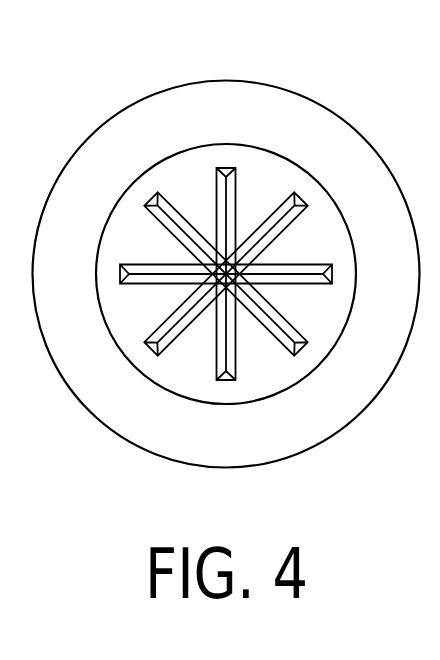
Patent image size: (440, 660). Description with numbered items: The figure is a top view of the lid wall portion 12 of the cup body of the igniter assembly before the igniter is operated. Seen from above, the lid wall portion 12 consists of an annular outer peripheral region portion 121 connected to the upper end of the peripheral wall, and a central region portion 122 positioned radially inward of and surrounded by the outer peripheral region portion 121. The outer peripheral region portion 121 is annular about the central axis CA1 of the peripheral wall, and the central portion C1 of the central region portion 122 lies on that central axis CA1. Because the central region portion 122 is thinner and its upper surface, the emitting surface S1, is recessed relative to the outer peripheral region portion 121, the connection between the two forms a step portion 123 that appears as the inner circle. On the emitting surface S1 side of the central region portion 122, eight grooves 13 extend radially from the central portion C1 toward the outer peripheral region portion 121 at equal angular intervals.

The lid wall portion 12 is at (227, 80).
The emitting surface S1 is at (273, 105).
The outer peripheral region portion 121 is at (88, 256).
The central region portion 122 is at (158, 256).
The step portion 123 is at (181, 157).
The grooves 13 is at (312, 265).
The central portion C1 is at (282, 198).
The central axis CA1 is at (226, 274).